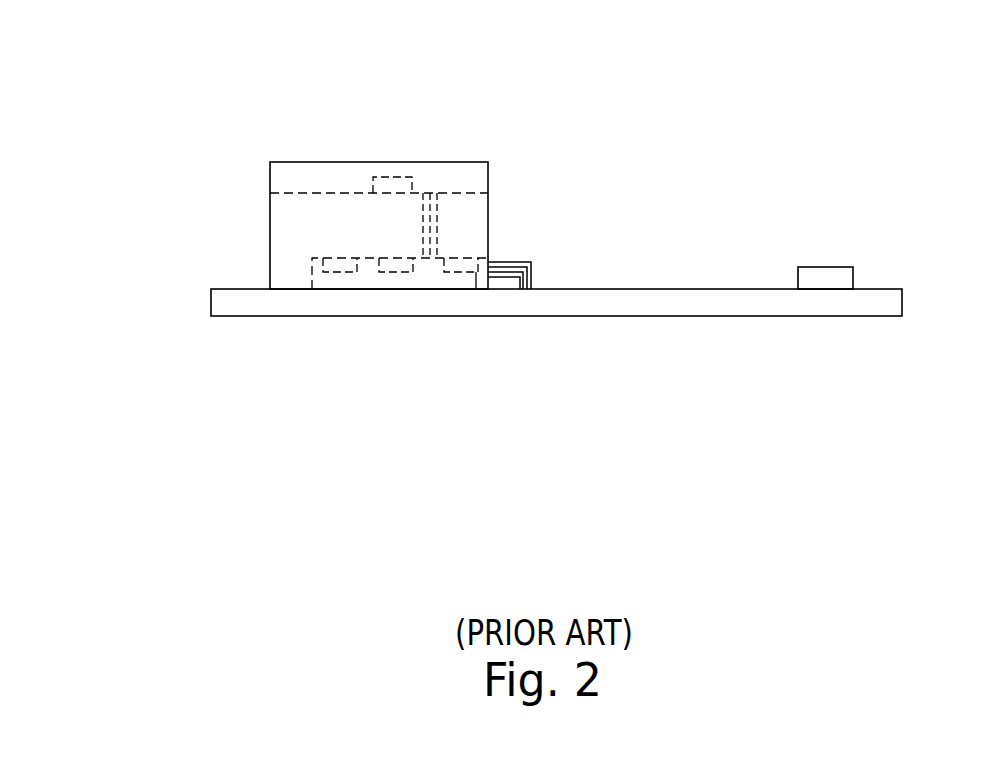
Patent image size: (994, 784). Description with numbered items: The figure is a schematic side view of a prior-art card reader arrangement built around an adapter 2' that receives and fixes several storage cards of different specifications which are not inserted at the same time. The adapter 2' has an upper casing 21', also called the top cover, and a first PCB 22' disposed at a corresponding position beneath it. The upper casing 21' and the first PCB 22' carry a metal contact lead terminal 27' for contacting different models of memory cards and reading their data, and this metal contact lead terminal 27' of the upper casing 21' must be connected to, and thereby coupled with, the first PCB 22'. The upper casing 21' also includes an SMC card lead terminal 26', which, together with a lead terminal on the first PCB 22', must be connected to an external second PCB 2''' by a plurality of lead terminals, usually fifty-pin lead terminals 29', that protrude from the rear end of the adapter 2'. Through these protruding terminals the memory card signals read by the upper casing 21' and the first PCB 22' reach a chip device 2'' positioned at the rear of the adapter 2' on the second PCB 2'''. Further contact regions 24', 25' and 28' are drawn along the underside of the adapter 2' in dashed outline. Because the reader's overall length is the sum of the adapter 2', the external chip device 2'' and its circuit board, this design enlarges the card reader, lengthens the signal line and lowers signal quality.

The adapter 2' is at (336, 207).
The chip device 2'' is at (839, 229).
The second PCB 2''' is at (556, 348).
The upper casing 21' is at (379, 178).
The first PCB 22' is at (529, 341).
The bonding pad 24' is at (269, 221).
The bonding pad 25' is at (345, 177).
The SMC card lead terminal 26' is at (391, 99).
The metal contact lead terminal 27' is at (492, 198).
The bonding pad 28' is at (448, 325).
The 50-pin lead terminals 29' is at (566, 222).